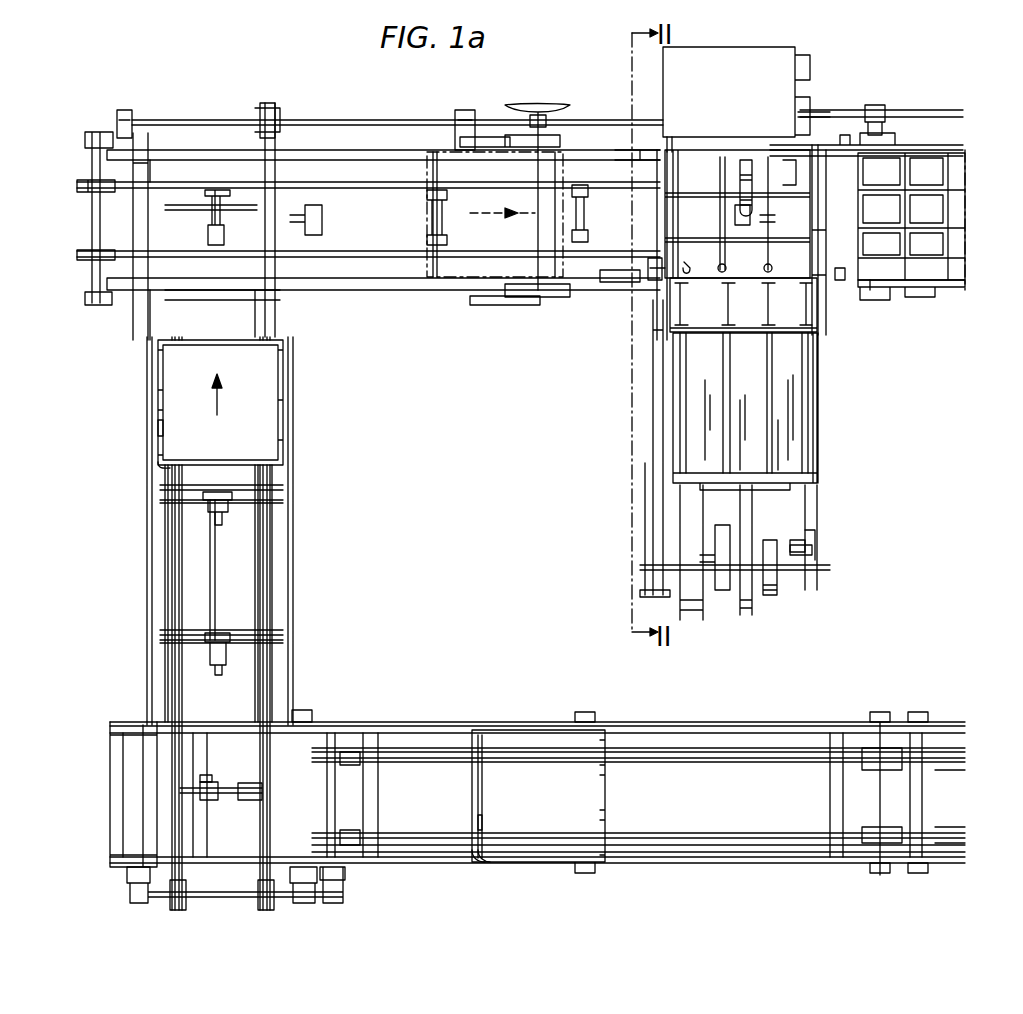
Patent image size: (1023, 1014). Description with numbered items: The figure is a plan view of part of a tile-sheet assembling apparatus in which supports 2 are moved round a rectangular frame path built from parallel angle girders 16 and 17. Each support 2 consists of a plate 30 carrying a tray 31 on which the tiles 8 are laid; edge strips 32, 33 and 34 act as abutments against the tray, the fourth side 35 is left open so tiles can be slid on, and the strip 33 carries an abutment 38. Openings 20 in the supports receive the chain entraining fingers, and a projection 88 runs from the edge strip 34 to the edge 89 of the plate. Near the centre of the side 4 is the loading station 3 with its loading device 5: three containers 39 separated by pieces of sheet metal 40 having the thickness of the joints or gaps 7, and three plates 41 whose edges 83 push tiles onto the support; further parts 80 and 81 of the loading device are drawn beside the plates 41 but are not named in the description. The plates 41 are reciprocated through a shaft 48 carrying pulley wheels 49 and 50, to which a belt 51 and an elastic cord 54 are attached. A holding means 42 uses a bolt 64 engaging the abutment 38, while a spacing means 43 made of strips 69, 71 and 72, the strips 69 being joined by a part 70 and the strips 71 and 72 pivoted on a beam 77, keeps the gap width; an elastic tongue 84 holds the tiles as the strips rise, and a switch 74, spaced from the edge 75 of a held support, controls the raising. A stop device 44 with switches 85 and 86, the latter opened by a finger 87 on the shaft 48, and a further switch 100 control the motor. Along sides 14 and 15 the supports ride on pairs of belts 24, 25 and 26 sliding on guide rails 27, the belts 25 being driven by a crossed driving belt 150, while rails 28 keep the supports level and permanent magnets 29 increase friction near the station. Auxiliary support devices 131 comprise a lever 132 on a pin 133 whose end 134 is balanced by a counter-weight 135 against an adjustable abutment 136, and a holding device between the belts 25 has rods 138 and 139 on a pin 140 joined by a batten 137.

The support 2 is at (460, 262).
The loading station 3 is at (813, 132).
The side of the frame 4 is at (940, 110).
The loading device 5 is at (820, 382).
The joints or gaps 7 is at (912, 200).
The tiles 8 is at (945, 310).
The side of the frame 14 is at (808, 873).
The side of the frame 15 is at (118, 525).
The angle girder 16 is at (292, 445).
The angle girder 17 is at (148, 578).
The openings 20 is at (158, 400).
The pair of endless belts 24 is at (922, 760).
The pair of endless belts 25 is at (258, 712).
The pair of endless belts 26 is at (352, 255).
The guide rail 27 is at (950, 775).
The rails 28 is at (640, 157).
The permanent magnets 29 is at (322, 220).
The plate 30 is at (205, 462).
The tray 31 is at (220, 402).
The edge strip 32 is at (605, 795).
The edge strip 33 is at (545, 730).
The edge strip 34 is at (870, 282).
The fourth side of the plate 35 is at (540, 858).
The abutment 38 is at (672, 152).
The containers 39 is at (705, 322).
The pieces of sheet metal 40 is at (735, 315).
The plates 41 is at (797, 440).
The holding means 42 is at (690, 112).
The spacing means 43 is at (660, 268).
The stop device 44 is at (815, 292).
The shaft 48 is at (790, 575).
The pulley wheel 49 is at (738, 615).
The pulley wheel 50 is at (750, 517).
The belt 51 is at (745, 618).
The elastic cord 54 is at (778, 592).
The bolt or stud 64 is at (702, 150).
The strips or rails 69 is at (740, 220).
The part 70 is at (742, 140).
The strip or rail 71 is at (800, 192).
The strip or rail 72 is at (745, 254).
The switch 74 is at (935, 148).
The edge of a support 75 is at (782, 318).
The beam 77 is at (702, 255).
The side frame 80 is at (655, 453).
The rod 81 is at (722, 428).
The edges of the plates 83 is at (752, 335).
The elastic tongue 84 is at (748, 185).
The switch 85 is at (792, 310).
The switch 86 is at (797, 540).
The finger 87 is at (802, 558).
The projection 88 is at (858, 240).
The edge of the plate 89 is at (840, 278).
The switch 100 is at (930, 312).
The auxiliary support device 131 is at (190, 234).
The lever 132 is at (222, 788).
The pin 133 is at (206, 778).
The end of the lever 134 is at (183, 793).
The counter-weight 135 is at (262, 793).
The adjustable abutment 136 is at (213, 795).
The rail or batten 137 is at (235, 683).
The rod 138 is at (228, 670).
The rod 139 is at (225, 522).
The pin 140 is at (218, 620).
The crossed driving belt 150 is at (250, 165).